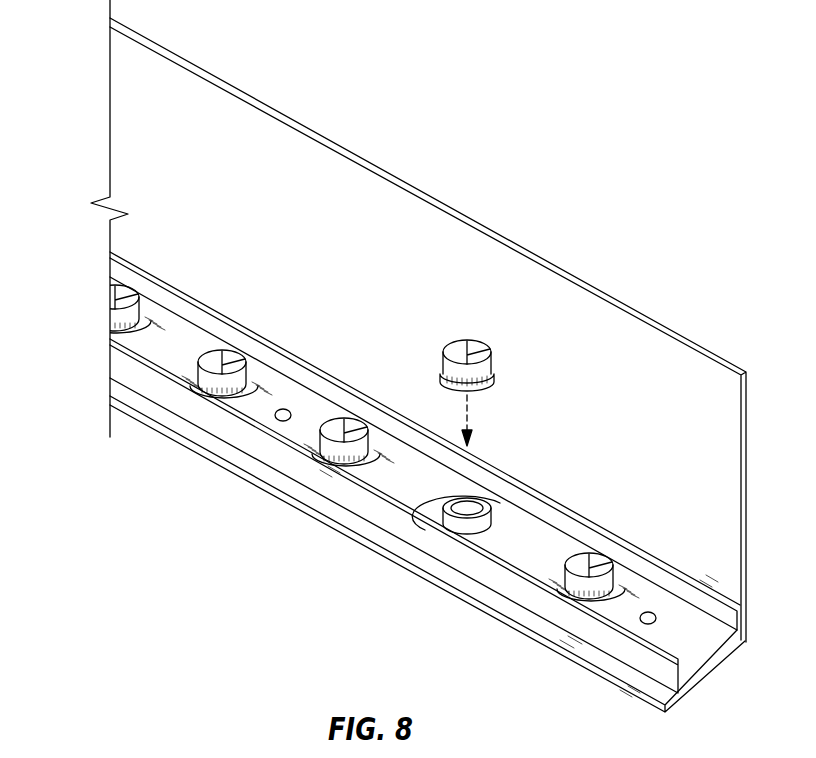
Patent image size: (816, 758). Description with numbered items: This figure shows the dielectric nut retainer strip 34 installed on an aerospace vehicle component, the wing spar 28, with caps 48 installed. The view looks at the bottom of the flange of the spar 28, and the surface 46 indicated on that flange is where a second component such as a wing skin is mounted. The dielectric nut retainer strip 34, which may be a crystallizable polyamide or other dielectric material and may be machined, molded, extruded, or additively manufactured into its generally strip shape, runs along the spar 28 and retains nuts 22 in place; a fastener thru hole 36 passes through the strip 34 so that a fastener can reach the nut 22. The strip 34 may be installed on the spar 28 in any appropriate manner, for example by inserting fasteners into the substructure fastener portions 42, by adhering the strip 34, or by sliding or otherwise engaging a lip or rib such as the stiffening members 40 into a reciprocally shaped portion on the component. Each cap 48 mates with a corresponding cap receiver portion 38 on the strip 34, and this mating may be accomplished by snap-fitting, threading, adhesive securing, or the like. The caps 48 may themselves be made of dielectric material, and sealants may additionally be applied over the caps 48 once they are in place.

The nut 22 is at (490, 522).
The wing spar 28 is at (557, 382).
The dielectric nut retainer strip 34 is at (158, 338).
The fastener thru hole 36 is at (458, 494).
The cap receiver portion 38 is at (458, 506).
The stiffening member 40 is at (668, 565).
The substructure fastener portion 42 is at (283, 409).
The surface 46 is at (455, 606).
The cap 48 is at (220, 360).